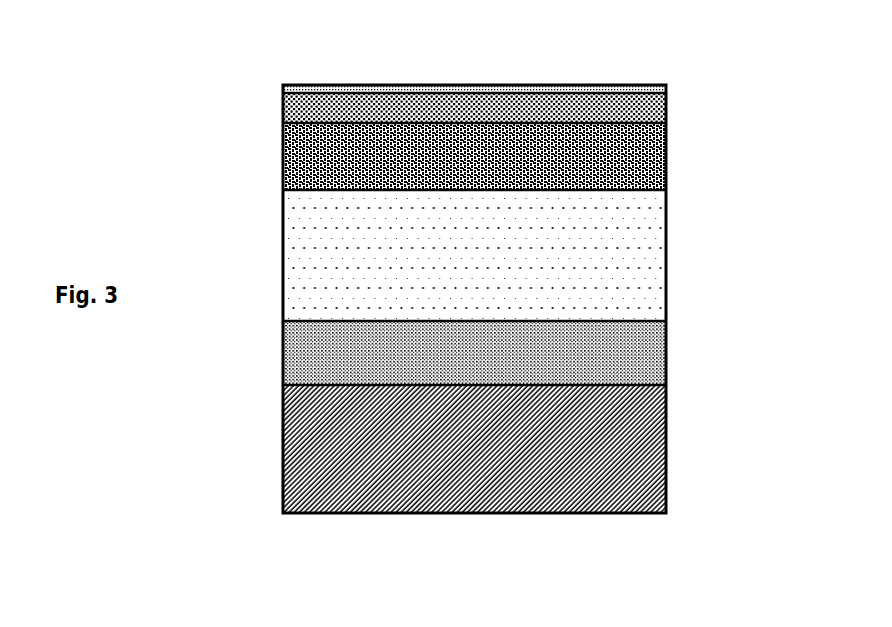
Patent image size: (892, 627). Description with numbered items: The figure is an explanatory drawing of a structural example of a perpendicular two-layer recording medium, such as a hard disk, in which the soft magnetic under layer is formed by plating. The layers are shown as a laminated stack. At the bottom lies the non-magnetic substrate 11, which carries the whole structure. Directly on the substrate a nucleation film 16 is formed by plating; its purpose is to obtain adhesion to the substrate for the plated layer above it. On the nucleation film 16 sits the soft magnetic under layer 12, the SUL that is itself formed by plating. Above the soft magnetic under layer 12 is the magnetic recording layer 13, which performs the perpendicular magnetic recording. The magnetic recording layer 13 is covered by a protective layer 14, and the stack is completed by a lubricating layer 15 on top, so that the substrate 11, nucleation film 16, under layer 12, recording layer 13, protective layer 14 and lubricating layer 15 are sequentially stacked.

The non-magnetic substrate 11 is at (658, 442).
The soft magnetic under layer 12 is at (658, 250).
The magnetic recording layer 13 is at (658, 147).
The protective layer 14 is at (658, 98).
The lubricating layer 15 is at (645, 77).
The nucleation film 16 is at (658, 343).